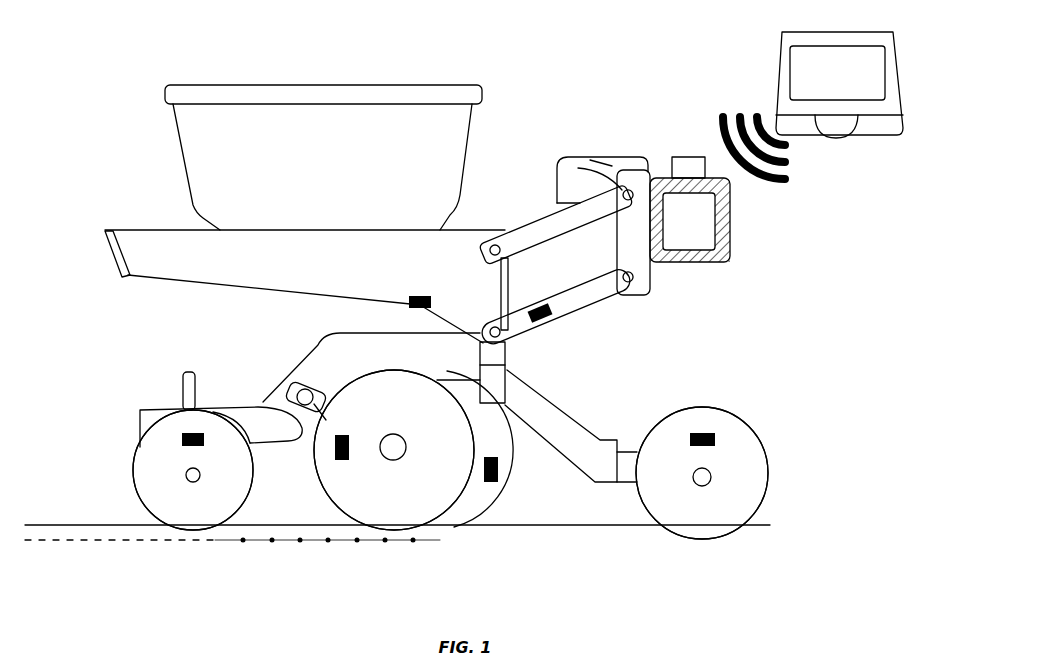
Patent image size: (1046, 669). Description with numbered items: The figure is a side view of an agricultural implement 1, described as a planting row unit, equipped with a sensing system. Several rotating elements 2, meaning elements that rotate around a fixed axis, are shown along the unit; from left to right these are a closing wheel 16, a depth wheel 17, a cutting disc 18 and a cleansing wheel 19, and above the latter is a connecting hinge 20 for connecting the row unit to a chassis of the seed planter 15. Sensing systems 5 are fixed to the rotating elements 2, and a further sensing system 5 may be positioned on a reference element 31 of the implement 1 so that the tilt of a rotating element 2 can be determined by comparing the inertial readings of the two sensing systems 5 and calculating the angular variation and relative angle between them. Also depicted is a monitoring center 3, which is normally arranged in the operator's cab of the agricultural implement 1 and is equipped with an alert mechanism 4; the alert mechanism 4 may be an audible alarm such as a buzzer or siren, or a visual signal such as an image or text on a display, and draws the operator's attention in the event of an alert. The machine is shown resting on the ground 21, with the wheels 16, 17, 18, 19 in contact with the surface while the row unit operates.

The agricultural implement 1 is at (125, 191).
The rotating elements 2 is at (595, 293).
The monitoring center 3 is at (762, 56).
The alert mechanism 4 is at (866, 108).
The sensing systems 5 is at (415, 300).
The seed planter 15 is at (727, 240).
The closing wheel 16 is at (142, 465).
The depth wheel 17 is at (388, 487).
The cutting disc 18 is at (470, 508).
The cleansing wheel 19 is at (735, 470).
The connecting hinge 20 is at (582, 300).
The ground surface 21 is at (68, 533).
The reference element 31 is at (156, 270).